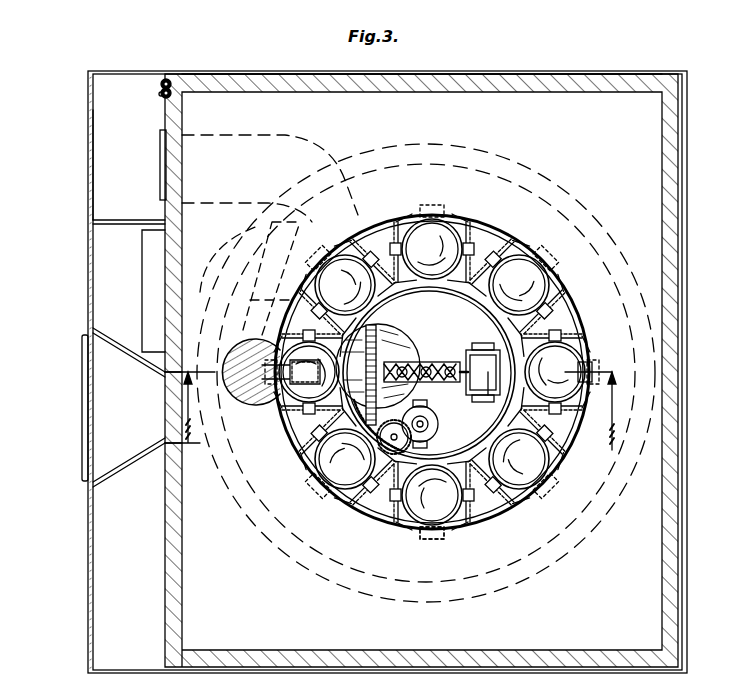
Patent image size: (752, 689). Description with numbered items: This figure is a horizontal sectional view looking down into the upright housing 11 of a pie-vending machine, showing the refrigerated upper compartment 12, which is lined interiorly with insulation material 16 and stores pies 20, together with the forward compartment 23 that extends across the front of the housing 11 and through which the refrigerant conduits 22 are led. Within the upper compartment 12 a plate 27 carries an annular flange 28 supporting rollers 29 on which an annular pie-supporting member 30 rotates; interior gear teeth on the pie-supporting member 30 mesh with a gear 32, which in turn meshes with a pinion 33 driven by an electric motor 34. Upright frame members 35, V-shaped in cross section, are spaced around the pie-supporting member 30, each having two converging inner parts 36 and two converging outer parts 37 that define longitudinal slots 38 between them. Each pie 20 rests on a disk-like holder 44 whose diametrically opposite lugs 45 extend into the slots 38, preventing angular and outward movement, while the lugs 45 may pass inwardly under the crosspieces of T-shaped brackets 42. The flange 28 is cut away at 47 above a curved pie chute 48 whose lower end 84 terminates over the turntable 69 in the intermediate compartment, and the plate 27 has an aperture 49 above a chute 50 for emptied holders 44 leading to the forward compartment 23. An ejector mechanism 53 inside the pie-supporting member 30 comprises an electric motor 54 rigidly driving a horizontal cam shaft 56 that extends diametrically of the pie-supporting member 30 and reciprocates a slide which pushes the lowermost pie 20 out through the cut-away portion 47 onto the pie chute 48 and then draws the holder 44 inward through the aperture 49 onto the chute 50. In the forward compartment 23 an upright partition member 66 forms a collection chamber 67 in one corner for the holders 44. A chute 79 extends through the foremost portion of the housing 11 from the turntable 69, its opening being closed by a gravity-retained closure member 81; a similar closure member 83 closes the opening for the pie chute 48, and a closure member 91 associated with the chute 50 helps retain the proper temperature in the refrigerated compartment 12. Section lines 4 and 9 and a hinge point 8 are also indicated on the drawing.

The section line 4- 4 is at (390, 406).
The hinge bolt 8 is at (166, 88).
The section line 9- 9 is at (363, 327).
The housing 11 is at (262, 73).
The upper compartment 12 is at (577, 128).
The insulation material 16 is at (562, 84).
The pie 20 is at (532, 272).
The refrigerant conduit 22 is at (158, 95).
The forward compartment 23 is at (112, 276).
The plate 27 is at (580, 510).
The annular flange 28 is at (218, 504).
The roller 29 is at (578, 355).
The annular pie-supporting member 30 is at (368, 504).
The gear 32 is at (432, 493).
The pinion 33 is at (440, 418).
The electric motor 34 is at (438, 436).
The frame member 35 is at (507, 500).
The inner part 36 is at (397, 458).
The outer part 37 is at (448, 530).
The longitudinal slot 38 is at (435, 372).
The T-shaped bracket 42 is at (538, 420).
The pie holder 44 is at (566, 282).
The lug 45 is at (492, 248).
The cut-away portion 47 is at (248, 400).
The pie chute 48 is at (271, 358).
The aperture 49 is at (438, 360).
The chute 50 is at (418, 336).
The ejector mechanism 53 is at (470, 354).
The electric motor 54 is at (486, 392).
The cam shaft 56 is at (430, 384).
The partition member 66 is at (108, 222).
The collection chamber 67 is at (112, 172).
The turntable 69 is at (552, 562).
The chute 79 is at (156, 446).
The closure member 81 is at (168, 400).
The closure member 83 is at (258, 242).
The lower end of chute 84 is at (271, 278).
The closure member 91 is at (184, 165).